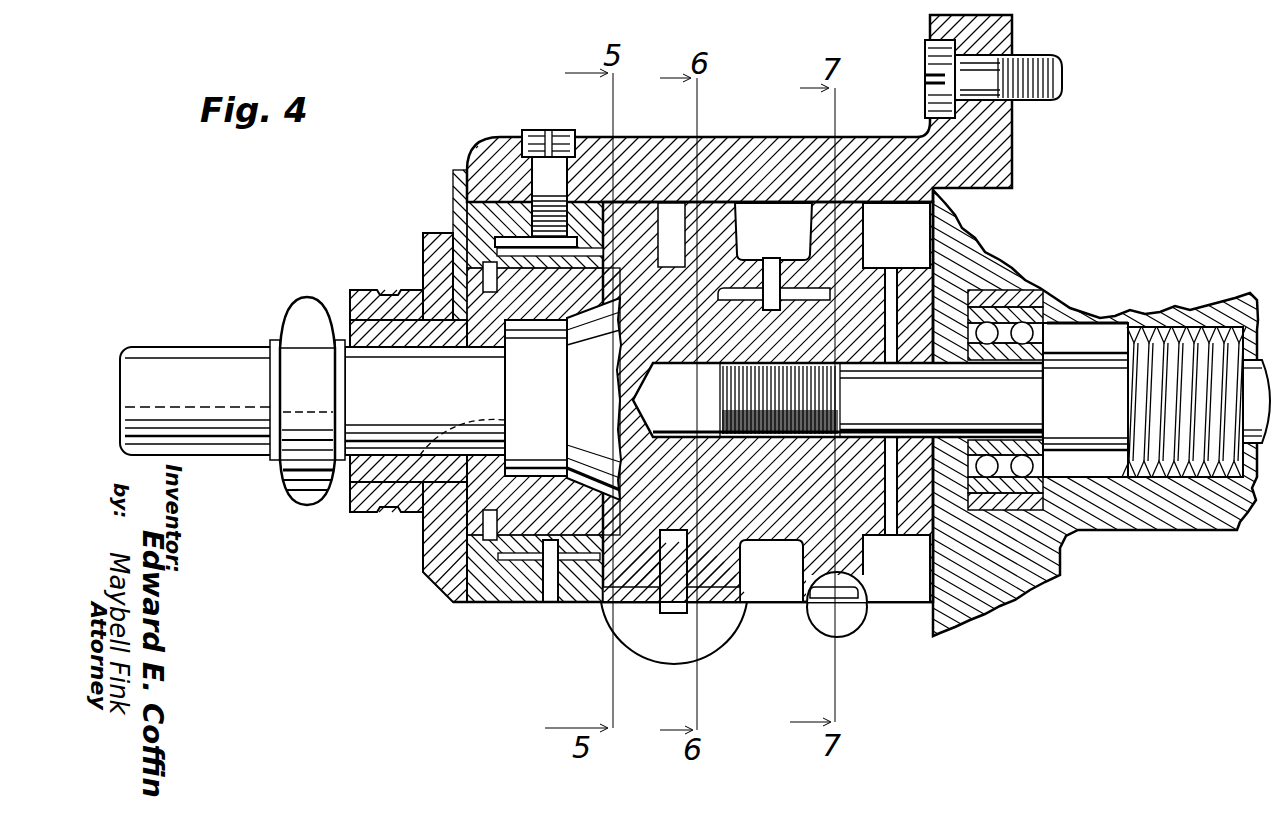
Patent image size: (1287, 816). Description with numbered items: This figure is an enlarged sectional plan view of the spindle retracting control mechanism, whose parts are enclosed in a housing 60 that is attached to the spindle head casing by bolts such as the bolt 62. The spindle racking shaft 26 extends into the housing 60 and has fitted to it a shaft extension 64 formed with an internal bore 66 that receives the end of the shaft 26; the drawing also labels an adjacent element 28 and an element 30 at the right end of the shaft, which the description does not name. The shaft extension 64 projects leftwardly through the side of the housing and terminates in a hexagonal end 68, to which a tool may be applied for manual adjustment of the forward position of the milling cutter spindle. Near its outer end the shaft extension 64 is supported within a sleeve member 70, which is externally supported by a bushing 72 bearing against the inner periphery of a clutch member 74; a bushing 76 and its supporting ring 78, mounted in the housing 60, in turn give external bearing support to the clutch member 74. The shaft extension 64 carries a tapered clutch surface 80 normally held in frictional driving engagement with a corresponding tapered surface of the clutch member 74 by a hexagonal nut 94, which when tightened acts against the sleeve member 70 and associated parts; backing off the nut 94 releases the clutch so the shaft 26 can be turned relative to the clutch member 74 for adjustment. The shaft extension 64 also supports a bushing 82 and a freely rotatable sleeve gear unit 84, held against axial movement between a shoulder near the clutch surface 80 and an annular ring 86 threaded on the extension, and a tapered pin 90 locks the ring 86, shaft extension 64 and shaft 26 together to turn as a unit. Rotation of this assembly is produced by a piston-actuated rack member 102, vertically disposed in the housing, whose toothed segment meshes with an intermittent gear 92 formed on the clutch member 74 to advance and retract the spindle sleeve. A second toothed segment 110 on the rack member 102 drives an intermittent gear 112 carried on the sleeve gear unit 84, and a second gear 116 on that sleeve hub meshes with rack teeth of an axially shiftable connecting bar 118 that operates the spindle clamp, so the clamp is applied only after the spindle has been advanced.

The spindle racking shaft 26 is at (1088, 347).
The ball bearing 28 is at (1015, 320).
The threaded shaft end 30 is at (1187, 323).
The housing 60 is at (1000, 137).
The bolt 62 is at (1036, 60).
The shaft extension 64 is at (955, 330).
The internal bore 66 is at (675, 435).
The hexagonal end 68 is at (168, 342).
The sleeve member 70 is at (437, 303).
The bushing 72 is at (455, 262).
The clutch member 74 is at (475, 262).
The bushing 76 is at (475, 250).
The supporting ring 78 is at (470, 205).
The tapered clutch surface 80 is at (580, 384).
The bushing 82 is at (732, 305).
The sleeve gear unit 84 is at (797, 267).
The annular ring 86 is at (877, 270).
The tapered pin 90 is at (892, 532).
The intermittent gear 92 is at (605, 600).
The hexagonal nut 94 is at (297, 312).
The rack member 102 is at (645, 673).
The second toothed segment 110 is at (735, 600).
The intermittent gear 112 is at (740, 582).
The second gear 116 is at (858, 592).
The connecting bar 118 is at (860, 626).